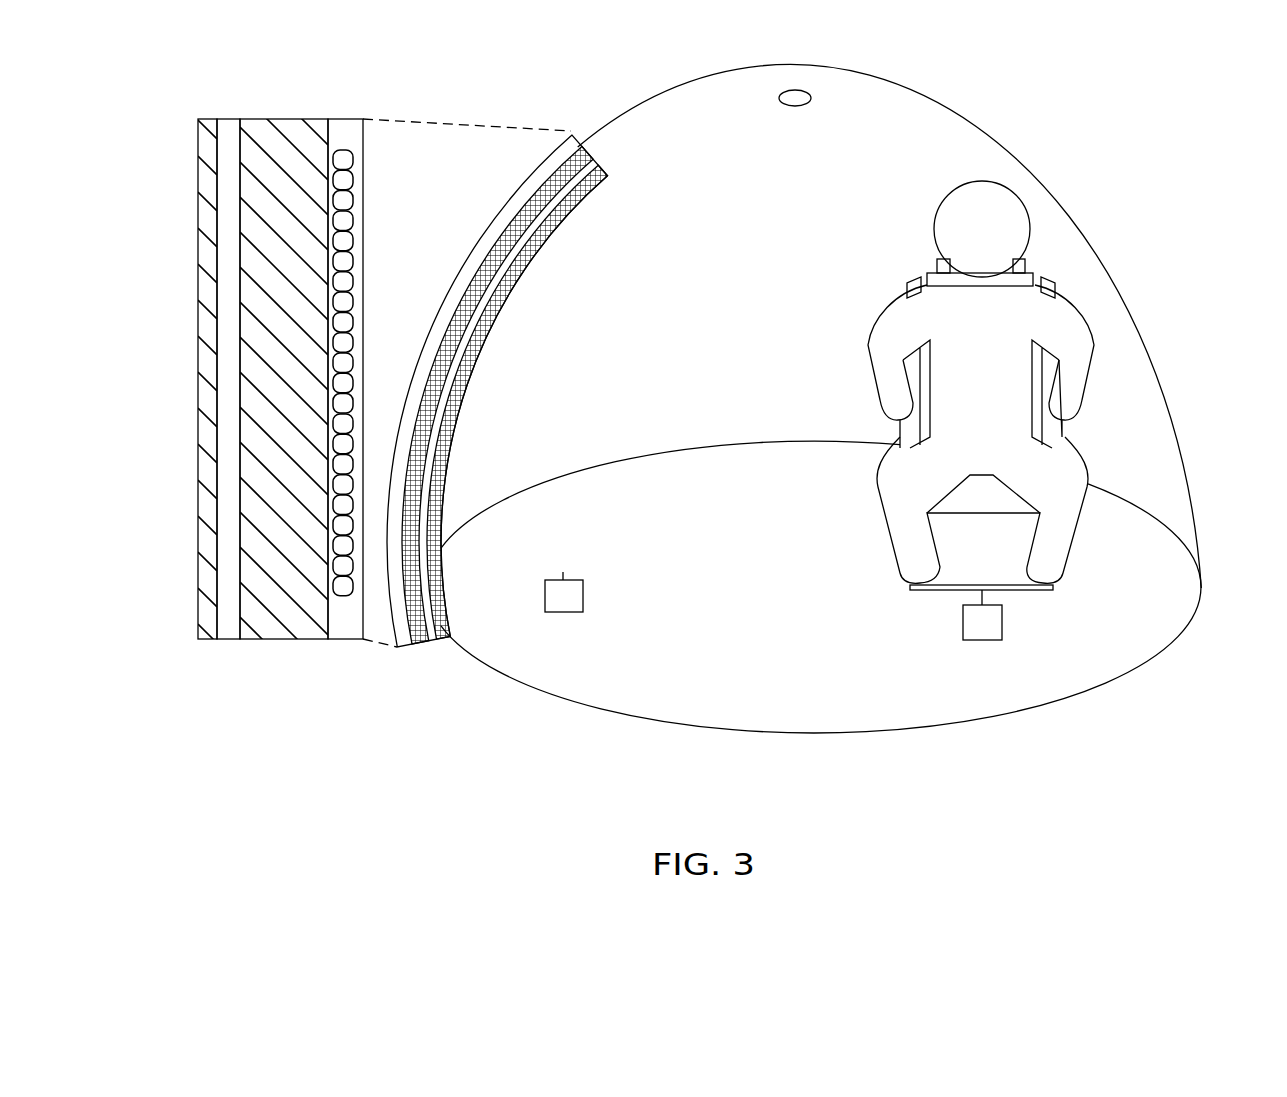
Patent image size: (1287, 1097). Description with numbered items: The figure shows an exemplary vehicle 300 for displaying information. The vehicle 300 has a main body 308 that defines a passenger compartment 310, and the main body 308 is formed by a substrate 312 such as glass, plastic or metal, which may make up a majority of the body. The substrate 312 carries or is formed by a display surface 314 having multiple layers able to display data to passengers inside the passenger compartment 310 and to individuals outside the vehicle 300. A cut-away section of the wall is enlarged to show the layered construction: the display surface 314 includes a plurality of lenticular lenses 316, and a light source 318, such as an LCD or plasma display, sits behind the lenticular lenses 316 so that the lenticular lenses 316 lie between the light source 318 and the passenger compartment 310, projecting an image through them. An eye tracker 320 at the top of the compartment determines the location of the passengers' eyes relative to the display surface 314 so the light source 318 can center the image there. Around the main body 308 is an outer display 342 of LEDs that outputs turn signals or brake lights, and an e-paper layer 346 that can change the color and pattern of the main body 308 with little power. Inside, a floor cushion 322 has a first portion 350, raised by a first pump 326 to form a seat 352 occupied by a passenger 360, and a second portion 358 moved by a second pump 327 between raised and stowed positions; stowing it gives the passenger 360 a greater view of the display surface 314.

The vehicle 300 is at (1130, 207).
The main body 308 is at (1152, 361).
The passenger compartment 310 is at (710, 360).
The substrate 312 is at (1190, 463).
The display surface 314 is at (484, 327).
The lenticular lenses 316 is at (352, 658).
The light source 318 is at (262, 624).
The eye tracker 320 is at (793, 90).
The floor cushion 322 is at (744, 607).
The first pump 326 is at (1004, 628).
The second pump 327 is at (585, 598).
The outer display 342 is at (210, 599).
The e-paper layer 346 is at (224, 664).
The first portion 350 is at (1013, 410).
The seat 352 is at (1063, 434).
The second portion 358 is at (594, 521).
The passenger 360 is at (940, 226).